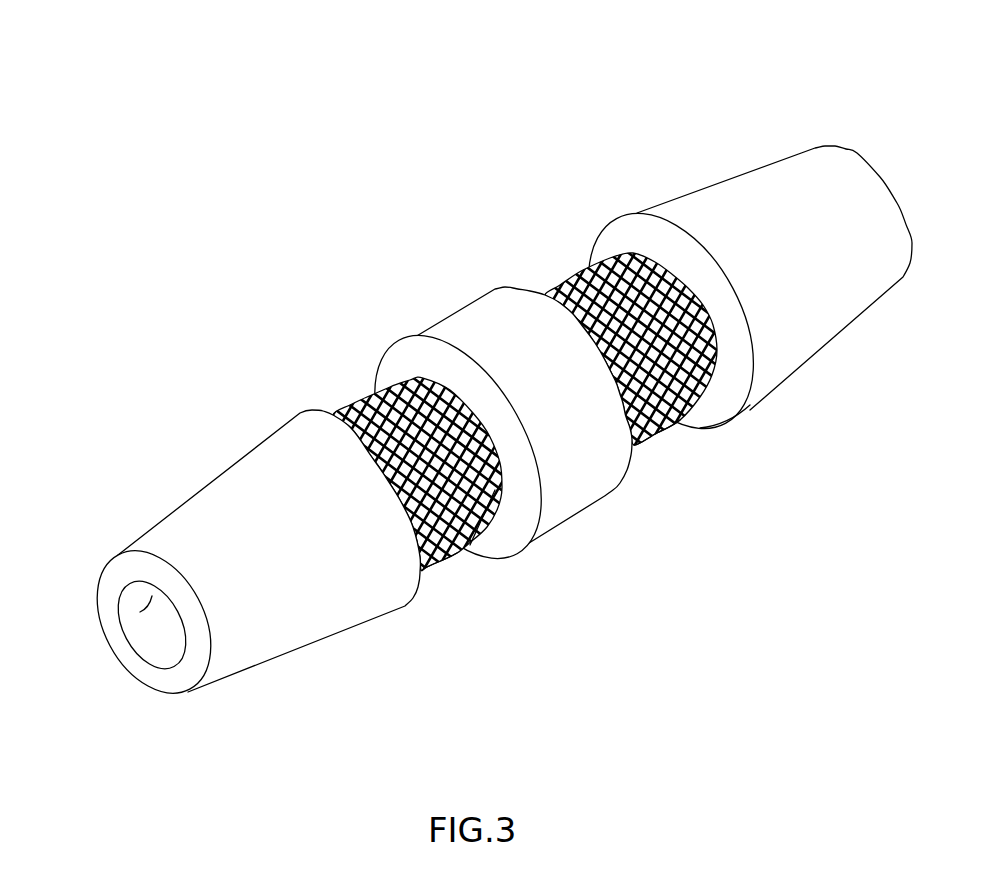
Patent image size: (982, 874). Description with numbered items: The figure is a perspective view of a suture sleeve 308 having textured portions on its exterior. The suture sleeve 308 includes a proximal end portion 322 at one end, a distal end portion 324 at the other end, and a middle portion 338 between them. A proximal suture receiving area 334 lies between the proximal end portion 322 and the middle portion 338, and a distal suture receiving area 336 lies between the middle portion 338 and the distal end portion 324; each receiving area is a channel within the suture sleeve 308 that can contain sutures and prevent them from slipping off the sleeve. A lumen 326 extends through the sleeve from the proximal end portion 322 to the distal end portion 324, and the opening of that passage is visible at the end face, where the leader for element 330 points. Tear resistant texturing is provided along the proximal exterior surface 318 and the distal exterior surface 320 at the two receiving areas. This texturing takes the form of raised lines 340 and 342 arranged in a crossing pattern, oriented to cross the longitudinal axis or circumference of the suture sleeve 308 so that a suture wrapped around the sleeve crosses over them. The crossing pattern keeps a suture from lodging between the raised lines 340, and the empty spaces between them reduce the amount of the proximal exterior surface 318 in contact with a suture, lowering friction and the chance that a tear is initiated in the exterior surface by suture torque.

The suture sleeve 308 is at (328, 125).
The proximal exterior surface 318 is at (500, 490).
The distal exterior surface 320 is at (740, 424).
The proximal end portion 322 is at (190, 512).
The distal end portion 324 is at (795, 177).
The lumen 326 is at (139, 626).
The bore 330 is at (152, 647).
The proximal suture receiving area 334 is at (353, 376).
The distal suture receiving area 336 is at (565, 254).
The middle portion 338 is at (477, 323).
The raised lines 340 is at (447, 560).
The raised lines 342 is at (682, 405).